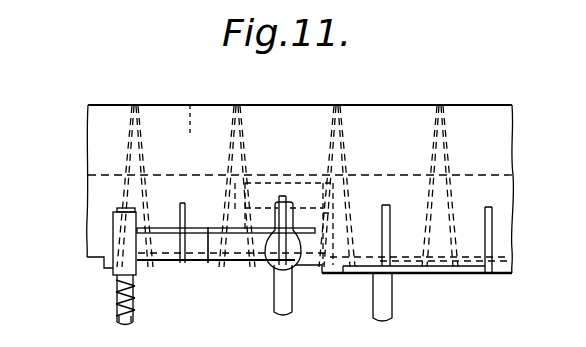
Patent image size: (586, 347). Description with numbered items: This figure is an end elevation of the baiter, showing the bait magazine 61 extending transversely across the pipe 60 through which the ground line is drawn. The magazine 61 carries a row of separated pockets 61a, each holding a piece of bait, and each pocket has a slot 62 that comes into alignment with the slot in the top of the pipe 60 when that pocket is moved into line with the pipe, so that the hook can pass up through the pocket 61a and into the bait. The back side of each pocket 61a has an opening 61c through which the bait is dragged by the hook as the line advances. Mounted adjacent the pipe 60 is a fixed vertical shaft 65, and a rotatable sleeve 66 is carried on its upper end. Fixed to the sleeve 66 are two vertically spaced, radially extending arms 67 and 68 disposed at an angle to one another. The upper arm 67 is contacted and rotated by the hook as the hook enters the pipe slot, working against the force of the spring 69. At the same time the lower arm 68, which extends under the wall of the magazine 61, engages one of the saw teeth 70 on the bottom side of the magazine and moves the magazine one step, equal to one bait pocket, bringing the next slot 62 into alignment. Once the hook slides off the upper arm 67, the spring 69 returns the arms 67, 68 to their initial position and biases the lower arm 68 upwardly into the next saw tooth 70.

The bait magazine 61 is at (475, 117).
The pocket 61a is at (192, 100).
The opening 61c is at (170, 190).
The slot 62 is at (284, 203).
The pipe 60 is at (268, 267).
The fixed vertical shaft 65 is at (128, 320).
The rotatable sleeve 66 is at (125, 231).
The upper arm 67 is at (208, 263).
The lower arm 68 is at (170, 263).
The spring 69 is at (115, 302).
The saw teeth 70 is at (340, 267).